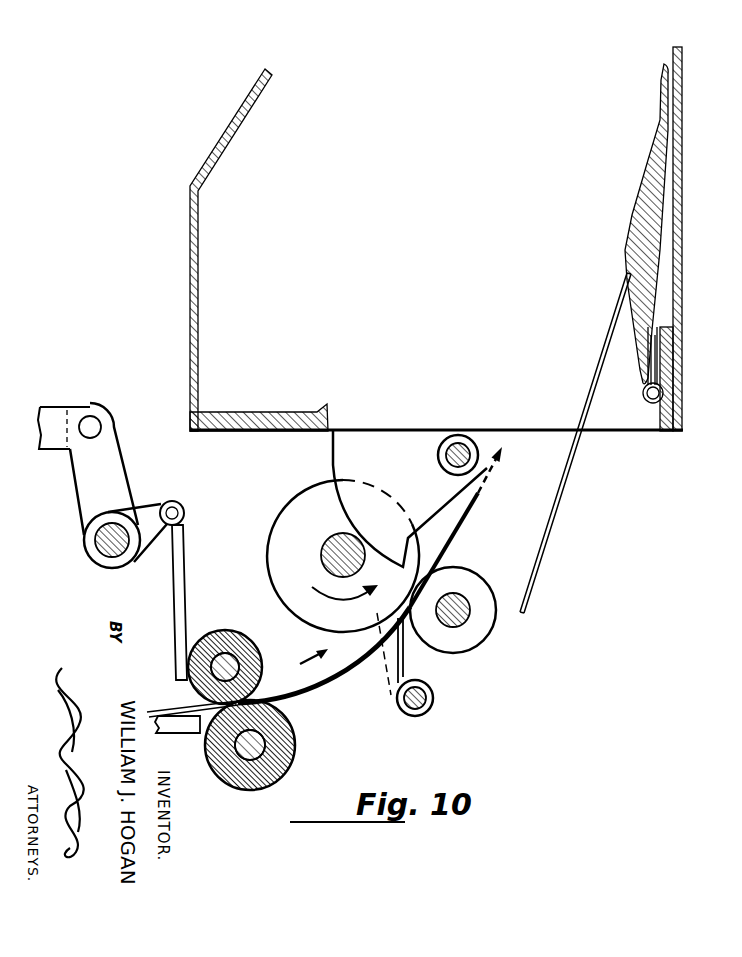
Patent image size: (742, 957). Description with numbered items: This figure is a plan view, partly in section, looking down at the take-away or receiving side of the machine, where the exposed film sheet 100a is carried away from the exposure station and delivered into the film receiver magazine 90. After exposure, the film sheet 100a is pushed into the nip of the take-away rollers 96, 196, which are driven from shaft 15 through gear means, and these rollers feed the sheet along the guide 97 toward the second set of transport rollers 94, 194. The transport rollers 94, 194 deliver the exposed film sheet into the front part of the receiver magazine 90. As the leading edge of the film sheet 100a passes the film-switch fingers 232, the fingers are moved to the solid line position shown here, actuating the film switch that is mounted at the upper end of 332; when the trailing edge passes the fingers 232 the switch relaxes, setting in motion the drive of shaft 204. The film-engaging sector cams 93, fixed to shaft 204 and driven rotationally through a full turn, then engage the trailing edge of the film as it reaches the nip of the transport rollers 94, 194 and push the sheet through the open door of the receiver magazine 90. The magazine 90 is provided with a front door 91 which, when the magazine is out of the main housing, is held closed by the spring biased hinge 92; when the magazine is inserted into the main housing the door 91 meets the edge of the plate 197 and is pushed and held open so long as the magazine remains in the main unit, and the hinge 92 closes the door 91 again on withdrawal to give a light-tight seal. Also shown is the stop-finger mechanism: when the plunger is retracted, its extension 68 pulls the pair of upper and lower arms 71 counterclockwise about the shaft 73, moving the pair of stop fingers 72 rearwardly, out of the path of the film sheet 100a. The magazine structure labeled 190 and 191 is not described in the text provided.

The film receiver magazine 90 is at (227, 210).
The side wall 190 is at (198, 299).
The bottom plate 191 is at (268, 421).
The front door 91 is at (647, 188).
The spring biased hinge 92 is at (662, 360).
The plate 197 is at (562, 487).
The film-engaging sector cams 93 is at (357, 460).
The transport roller 194 is at (293, 520).
The shaft 15 is at (331, 556).
The shaft 204 is at (462, 432).
The film sheet 100a is at (468, 510).
The transport roller 94 is at (480, 630).
The film-switch fingers 232 is at (403, 652).
The film switch mount 332 is at (426, 706).
The guide 97 is at (340, 673).
The take-away roller 96 is at (294, 753).
The take-away roller 196 is at (222, 633).
The extension 68 is at (55, 415).
The arms 71 is at (108, 475).
The shaft 73 is at (96, 545).
The stop fingers 72 is at (174, 575).